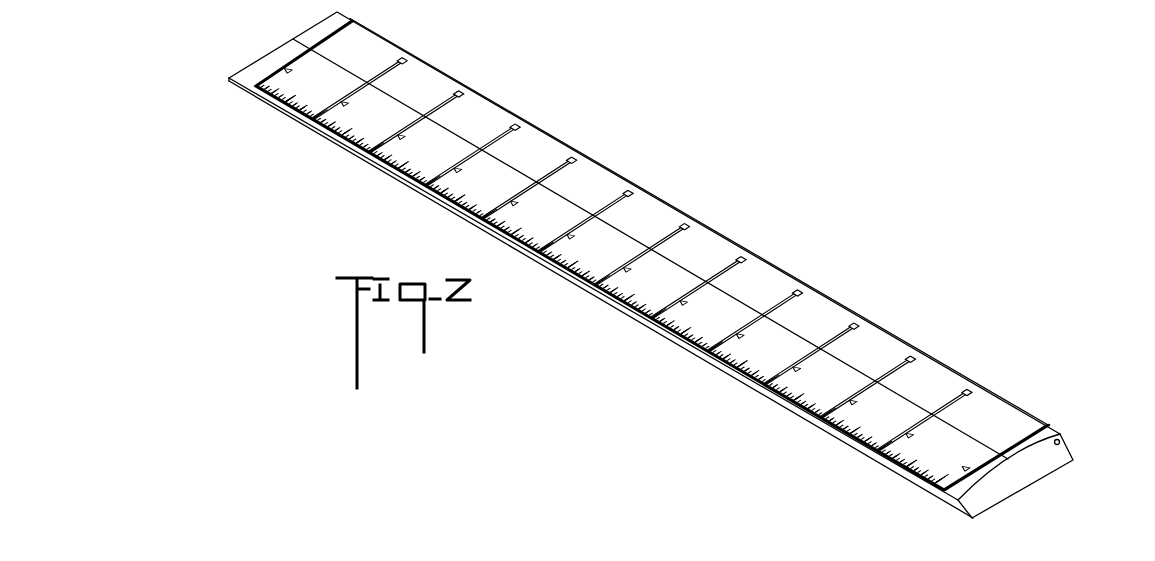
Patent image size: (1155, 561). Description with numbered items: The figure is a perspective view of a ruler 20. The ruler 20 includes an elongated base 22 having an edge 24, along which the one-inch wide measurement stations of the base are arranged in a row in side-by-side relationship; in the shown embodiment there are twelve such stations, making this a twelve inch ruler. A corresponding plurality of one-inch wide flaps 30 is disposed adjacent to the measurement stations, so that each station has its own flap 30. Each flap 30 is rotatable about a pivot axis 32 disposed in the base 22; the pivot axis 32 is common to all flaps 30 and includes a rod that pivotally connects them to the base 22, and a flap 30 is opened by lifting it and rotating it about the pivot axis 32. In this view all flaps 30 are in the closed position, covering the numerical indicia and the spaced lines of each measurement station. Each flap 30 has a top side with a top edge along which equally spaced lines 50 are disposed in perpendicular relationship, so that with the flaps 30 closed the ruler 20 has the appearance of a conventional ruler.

The ruler 20 is at (723, 168).
The elongated base 22 is at (1027, 470).
The edge 24 is at (615, 305).
The one-inch wide flaps 30 is at (472, 117).
The pivot axis 32 is at (1060, 441).
The equally spaced lines 50 is at (651, 255).